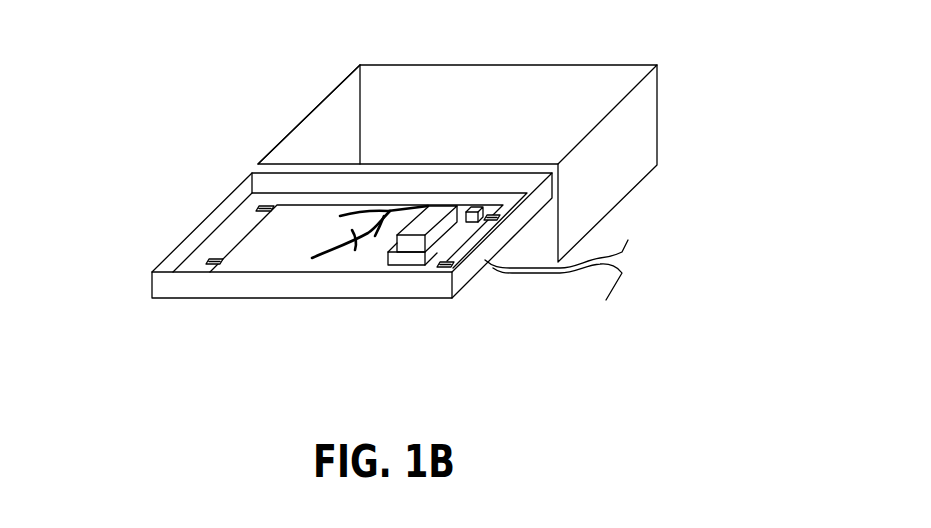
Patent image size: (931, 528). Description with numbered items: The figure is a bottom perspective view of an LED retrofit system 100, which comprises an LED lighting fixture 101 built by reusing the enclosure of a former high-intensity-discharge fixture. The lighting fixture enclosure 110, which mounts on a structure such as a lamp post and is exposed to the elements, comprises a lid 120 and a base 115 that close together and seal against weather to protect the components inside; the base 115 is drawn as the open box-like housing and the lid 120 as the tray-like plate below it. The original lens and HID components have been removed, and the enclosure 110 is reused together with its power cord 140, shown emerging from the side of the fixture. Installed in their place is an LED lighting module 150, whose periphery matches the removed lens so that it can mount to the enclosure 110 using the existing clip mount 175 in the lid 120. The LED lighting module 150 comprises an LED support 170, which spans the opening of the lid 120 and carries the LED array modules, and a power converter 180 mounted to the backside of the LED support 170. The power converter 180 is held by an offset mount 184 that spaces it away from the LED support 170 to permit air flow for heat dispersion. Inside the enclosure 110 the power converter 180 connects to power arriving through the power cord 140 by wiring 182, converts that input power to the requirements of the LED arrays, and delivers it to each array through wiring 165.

The LED retrofit system 100 is at (180, 84).
The LED lighting fixture 101 is at (158, 106).
The lighting fixture enclosure 110 is at (520, 144).
The base 115 is at (657, 131).
The lid 120 is at (326, 255).
The power cord 140 is at (542, 273).
The LED lighting module 150 is at (438, 324).
The wiring 165 is at (326, 274).
The LED support 170 is at (247, 233).
The mount 175 is at (212, 258).
The power converter 180 is at (440, 206).
The wiring 182 is at (444, 206).
The offset mount 184 is at (453, 266).